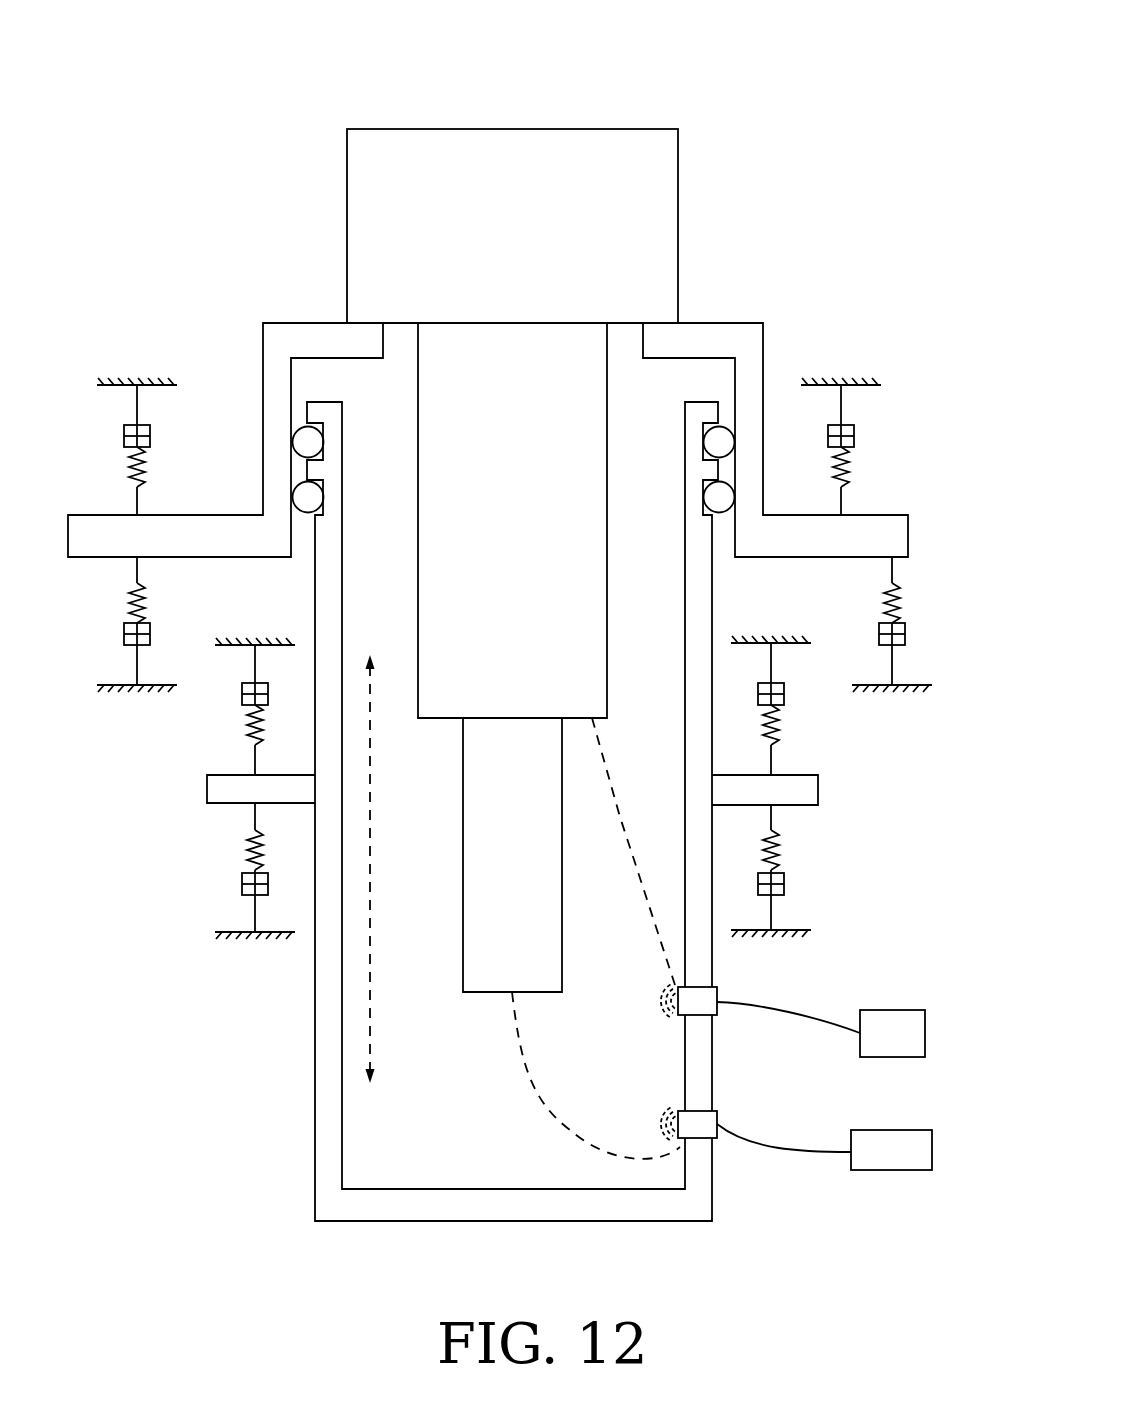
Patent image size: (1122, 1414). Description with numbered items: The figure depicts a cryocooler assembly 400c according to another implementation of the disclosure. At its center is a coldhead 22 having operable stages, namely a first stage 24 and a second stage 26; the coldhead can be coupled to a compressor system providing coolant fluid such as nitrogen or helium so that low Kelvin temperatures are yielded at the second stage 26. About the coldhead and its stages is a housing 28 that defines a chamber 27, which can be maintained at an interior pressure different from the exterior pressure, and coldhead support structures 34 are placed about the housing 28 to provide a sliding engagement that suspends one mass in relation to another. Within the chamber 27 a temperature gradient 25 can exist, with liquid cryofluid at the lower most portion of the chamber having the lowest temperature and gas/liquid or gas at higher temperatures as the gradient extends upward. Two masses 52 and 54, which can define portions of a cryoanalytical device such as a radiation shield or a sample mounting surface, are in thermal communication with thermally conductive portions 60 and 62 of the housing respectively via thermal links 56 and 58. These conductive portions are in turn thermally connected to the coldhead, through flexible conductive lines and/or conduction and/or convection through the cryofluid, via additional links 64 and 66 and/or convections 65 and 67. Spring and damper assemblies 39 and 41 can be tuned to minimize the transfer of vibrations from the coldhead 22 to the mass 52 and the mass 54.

The cryocooler assembly 400c is at (717, 85).
The coldhead 22 is at (502, 160).
The coldhead support structure 34 is at (712, 340).
The first stage 24 is at (553, 540).
The second stage 26 is at (490, 848).
The temperature gradient 25 is at (370, 988).
The housing 28 is at (698, 1070).
The chamber 27 is at (563, 1175).
The spring and damper assembly 39 is at (243, 727).
The spring and damper assembly 41 is at (248, 849).
The thermally conductive portion 60 is at (717, 990).
The thermally conductive portion 62 is at (717, 1114).
The additional link 64 is at (620, 815).
The convection 65 is at (660, 992).
The additional link 66 is at (523, 1062).
The convection 67 is at (660, 1116).
The thermal link 56 is at (790, 1008).
The thermal link 58 is at (785, 1152).
The mass 52 is at (922, 1018).
The mass 54 is at (925, 1138).